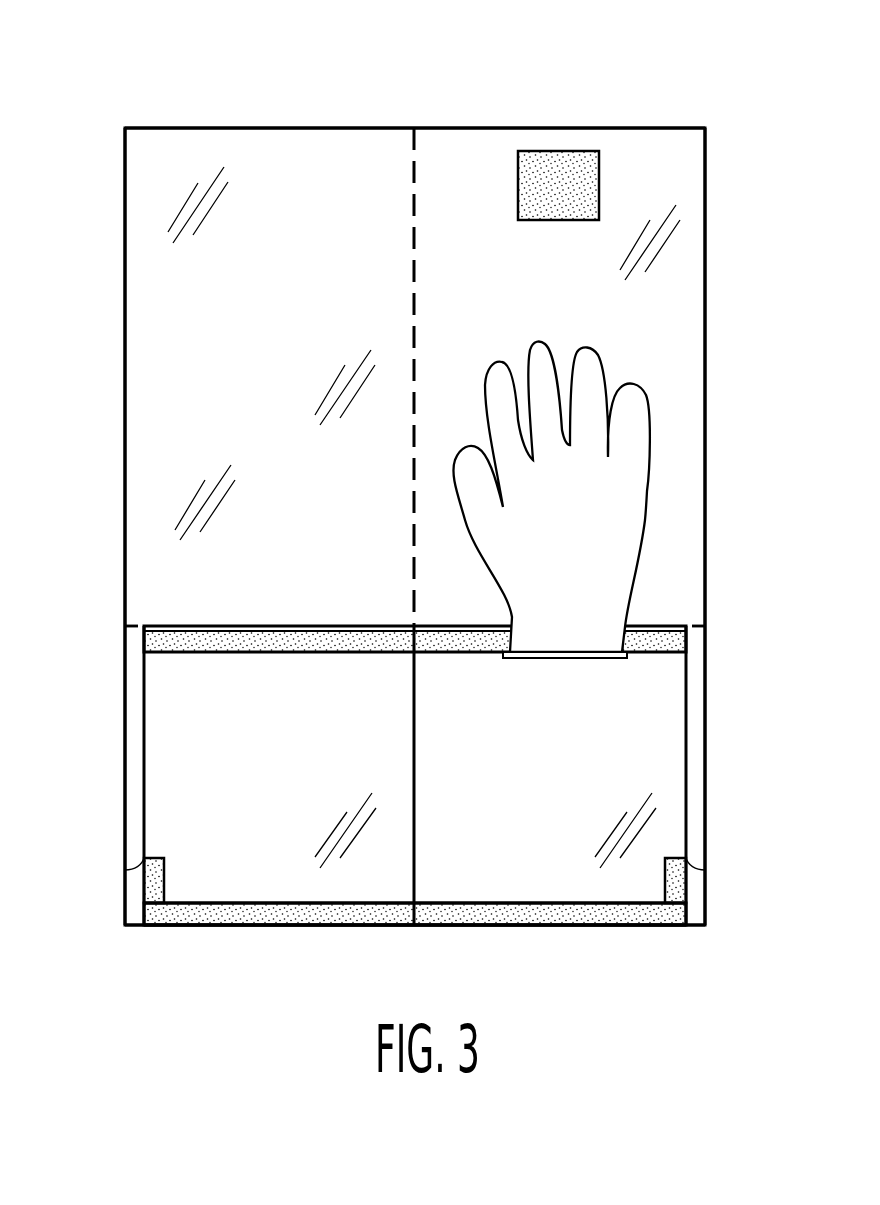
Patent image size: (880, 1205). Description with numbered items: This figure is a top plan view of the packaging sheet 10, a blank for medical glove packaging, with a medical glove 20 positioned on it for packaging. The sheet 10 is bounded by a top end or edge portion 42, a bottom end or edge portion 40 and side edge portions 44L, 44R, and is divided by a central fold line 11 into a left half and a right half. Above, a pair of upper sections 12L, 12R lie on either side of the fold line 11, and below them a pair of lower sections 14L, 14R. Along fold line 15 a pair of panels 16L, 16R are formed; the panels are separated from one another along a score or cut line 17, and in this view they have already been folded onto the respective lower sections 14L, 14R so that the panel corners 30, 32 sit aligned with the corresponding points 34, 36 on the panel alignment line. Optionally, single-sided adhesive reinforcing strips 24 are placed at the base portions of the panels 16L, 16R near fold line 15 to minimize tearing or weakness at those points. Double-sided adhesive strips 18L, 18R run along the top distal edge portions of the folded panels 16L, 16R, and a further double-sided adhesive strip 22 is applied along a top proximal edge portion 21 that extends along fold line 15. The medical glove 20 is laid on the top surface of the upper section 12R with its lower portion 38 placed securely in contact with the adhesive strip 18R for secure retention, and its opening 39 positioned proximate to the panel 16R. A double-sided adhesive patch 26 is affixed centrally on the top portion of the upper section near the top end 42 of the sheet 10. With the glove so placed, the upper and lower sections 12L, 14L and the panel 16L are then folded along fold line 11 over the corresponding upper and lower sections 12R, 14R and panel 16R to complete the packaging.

The packaging sheet 10 is at (195, 108).
The fold line 11 is at (414, 128).
The upper section 12L is at (287, 317).
The upper section 12R is at (582, 317).
The lower section 14L is at (135, 763).
The lower section 14R is at (697, 770).
The fold line 15 is at (208, 926).
The panel 16L is at (300, 788).
The panel 16R is at (576, 788).
The score or cut line 17 is at (416, 887).
The double-sided adhesive strip 18L is at (185, 630).
The double-sided adhesive strip 18R is at (653, 630).
The medical glove 20 is at (648, 491).
The top proximal edge portion 21 is at (285, 900).
The double-sided adhesive strip 22 is at (545, 915).
The single-sided adhesive reinforcing strip 24 is at (138, 887).
The double-sided adhesive patch 26 is at (556, 168).
The corner 30 is at (125, 626).
The corner 32 is at (705, 626).
The point 34 is at (125, 626).
The point 36 is at (705, 626).
The lower portion 38 is at (582, 637).
The opening 39 is at (523, 660).
The bottom end or edge portion 40 is at (628, 925).
The top end or edge portion 42 is at (283, 128).
The side edge portion 44L is at (125, 340).
The side edge portion 44R is at (705, 348).